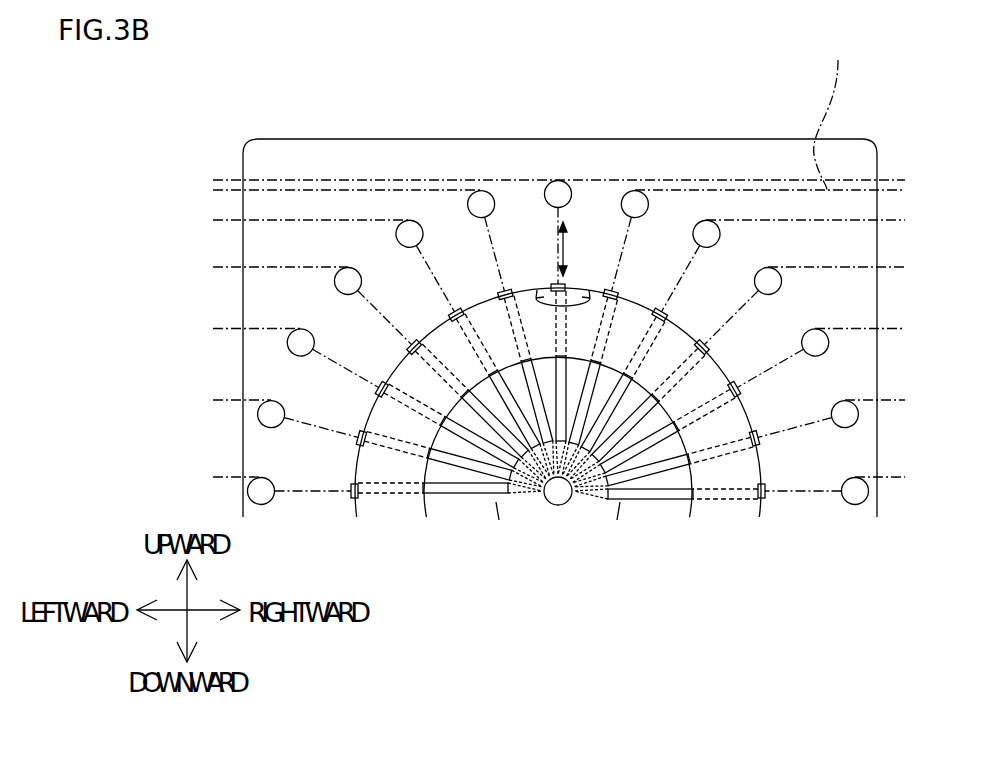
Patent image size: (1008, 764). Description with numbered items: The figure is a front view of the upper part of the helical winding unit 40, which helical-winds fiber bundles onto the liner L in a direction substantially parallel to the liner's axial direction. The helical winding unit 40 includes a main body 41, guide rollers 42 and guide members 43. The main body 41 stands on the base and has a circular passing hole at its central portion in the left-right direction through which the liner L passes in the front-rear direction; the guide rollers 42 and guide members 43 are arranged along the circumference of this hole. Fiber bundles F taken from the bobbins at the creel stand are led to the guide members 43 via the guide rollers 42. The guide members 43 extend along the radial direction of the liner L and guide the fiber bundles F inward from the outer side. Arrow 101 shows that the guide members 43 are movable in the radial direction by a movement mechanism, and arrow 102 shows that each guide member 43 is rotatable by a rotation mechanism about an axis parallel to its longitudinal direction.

The helical winding unit 40 is at (282, 124).
The main body 41 is at (428, 152).
The guide rollers 42 is at (708, 232).
The guide members 43 is at (599, 312).
The arrow 101 is at (560, 242).
The arrow 102 is at (542, 292).
The fiber bundles F is at (829, 109).
The liner L is at (493, 507).